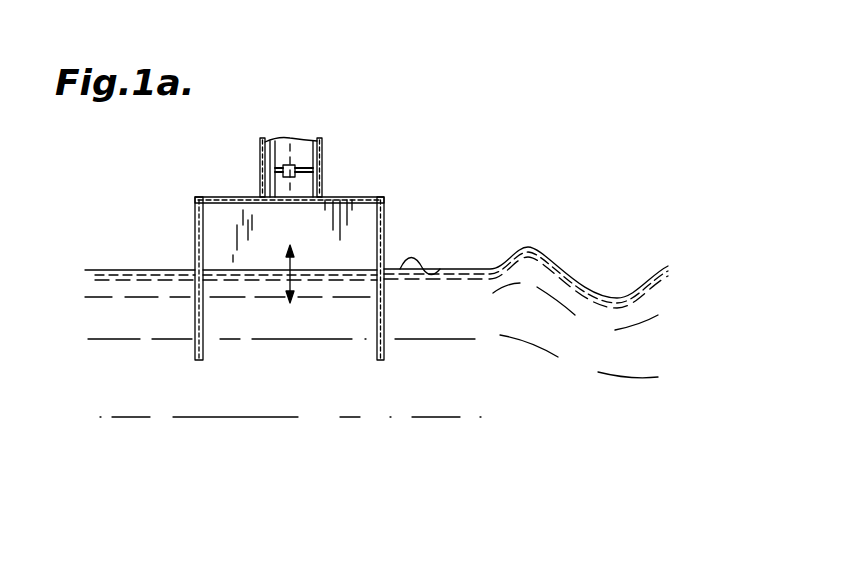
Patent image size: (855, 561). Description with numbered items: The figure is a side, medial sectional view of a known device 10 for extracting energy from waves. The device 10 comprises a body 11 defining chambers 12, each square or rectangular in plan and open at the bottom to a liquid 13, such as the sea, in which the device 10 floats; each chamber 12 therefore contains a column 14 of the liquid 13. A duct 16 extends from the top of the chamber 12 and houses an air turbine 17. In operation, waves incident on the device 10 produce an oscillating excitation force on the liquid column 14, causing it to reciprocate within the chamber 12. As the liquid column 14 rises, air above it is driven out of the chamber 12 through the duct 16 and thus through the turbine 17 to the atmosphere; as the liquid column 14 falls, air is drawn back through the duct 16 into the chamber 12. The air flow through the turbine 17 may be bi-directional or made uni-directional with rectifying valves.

The device 10 is at (273, 225).
The body 11 is at (384, 208).
The chamber 12 is at (222, 220).
The liquid 13 is at (105, 313).
The liquid column 14 is at (332, 310).
The duct 16 is at (260, 150).
The air turbine 17 is at (300, 170).